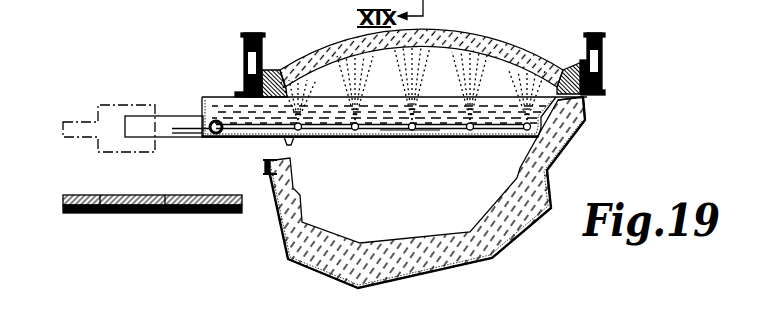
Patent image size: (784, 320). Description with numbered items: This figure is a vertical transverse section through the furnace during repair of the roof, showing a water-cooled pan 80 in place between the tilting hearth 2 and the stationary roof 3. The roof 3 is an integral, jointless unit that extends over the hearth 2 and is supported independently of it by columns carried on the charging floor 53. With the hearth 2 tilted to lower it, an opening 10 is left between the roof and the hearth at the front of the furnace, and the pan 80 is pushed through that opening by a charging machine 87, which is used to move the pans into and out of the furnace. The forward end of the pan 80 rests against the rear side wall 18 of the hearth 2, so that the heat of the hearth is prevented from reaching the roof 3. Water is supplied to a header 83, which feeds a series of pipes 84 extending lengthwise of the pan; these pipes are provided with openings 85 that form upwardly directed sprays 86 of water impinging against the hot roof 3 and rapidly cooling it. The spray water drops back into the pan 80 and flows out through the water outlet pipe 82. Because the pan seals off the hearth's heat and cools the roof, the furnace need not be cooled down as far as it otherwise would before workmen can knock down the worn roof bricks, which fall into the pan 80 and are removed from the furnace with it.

The tilting hearth 2 is at (380, 240).
The stationary roof 3 is at (484, 40).
The opening 10 is at (273, 150).
The rear side wall 18 is at (570, 117).
The charging floor 53 is at (62, 201).
The water-cooled pan 80 is at (218, 97).
The water outlet pipe 82 is at (200, 133).
The header 83 is at (213, 135).
The pipes 84 is at (440, 135).
The openings 85 is at (410, 137).
The sprays 86 is at (456, 62).
The charging machine 87 is at (75, 129).